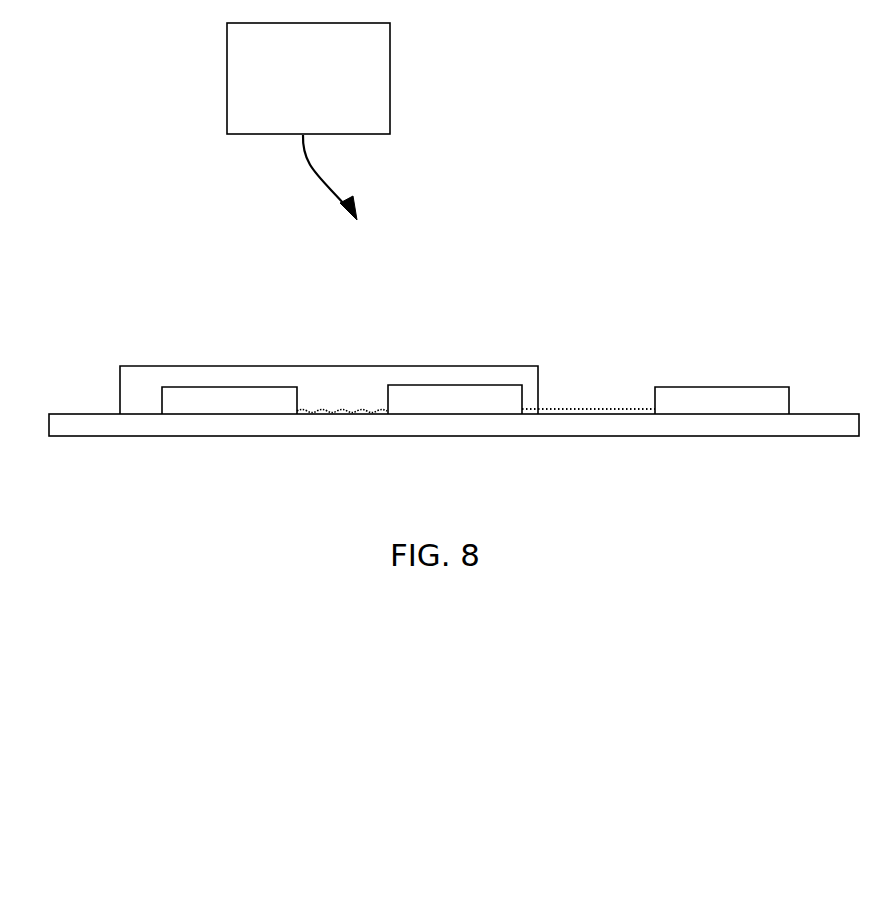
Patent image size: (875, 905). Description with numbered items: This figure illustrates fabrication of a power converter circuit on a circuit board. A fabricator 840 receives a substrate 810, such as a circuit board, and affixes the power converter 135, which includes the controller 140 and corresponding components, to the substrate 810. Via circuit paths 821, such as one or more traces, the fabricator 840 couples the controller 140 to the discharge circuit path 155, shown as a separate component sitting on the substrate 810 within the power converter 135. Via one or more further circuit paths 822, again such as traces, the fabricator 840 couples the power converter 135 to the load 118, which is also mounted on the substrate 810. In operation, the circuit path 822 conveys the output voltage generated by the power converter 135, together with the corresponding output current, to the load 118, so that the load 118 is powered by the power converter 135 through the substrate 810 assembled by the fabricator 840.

The fabricator 840 is at (291, 102).
The substrate 810 is at (818, 437).
The power converter 135 is at (120, 392).
The controller 140 is at (218, 385).
The discharge circuit path 155 is at (473, 383).
The load 118 is at (743, 381).
The circuit paths 821 is at (345, 409).
The circuit paths 822 is at (589, 405).